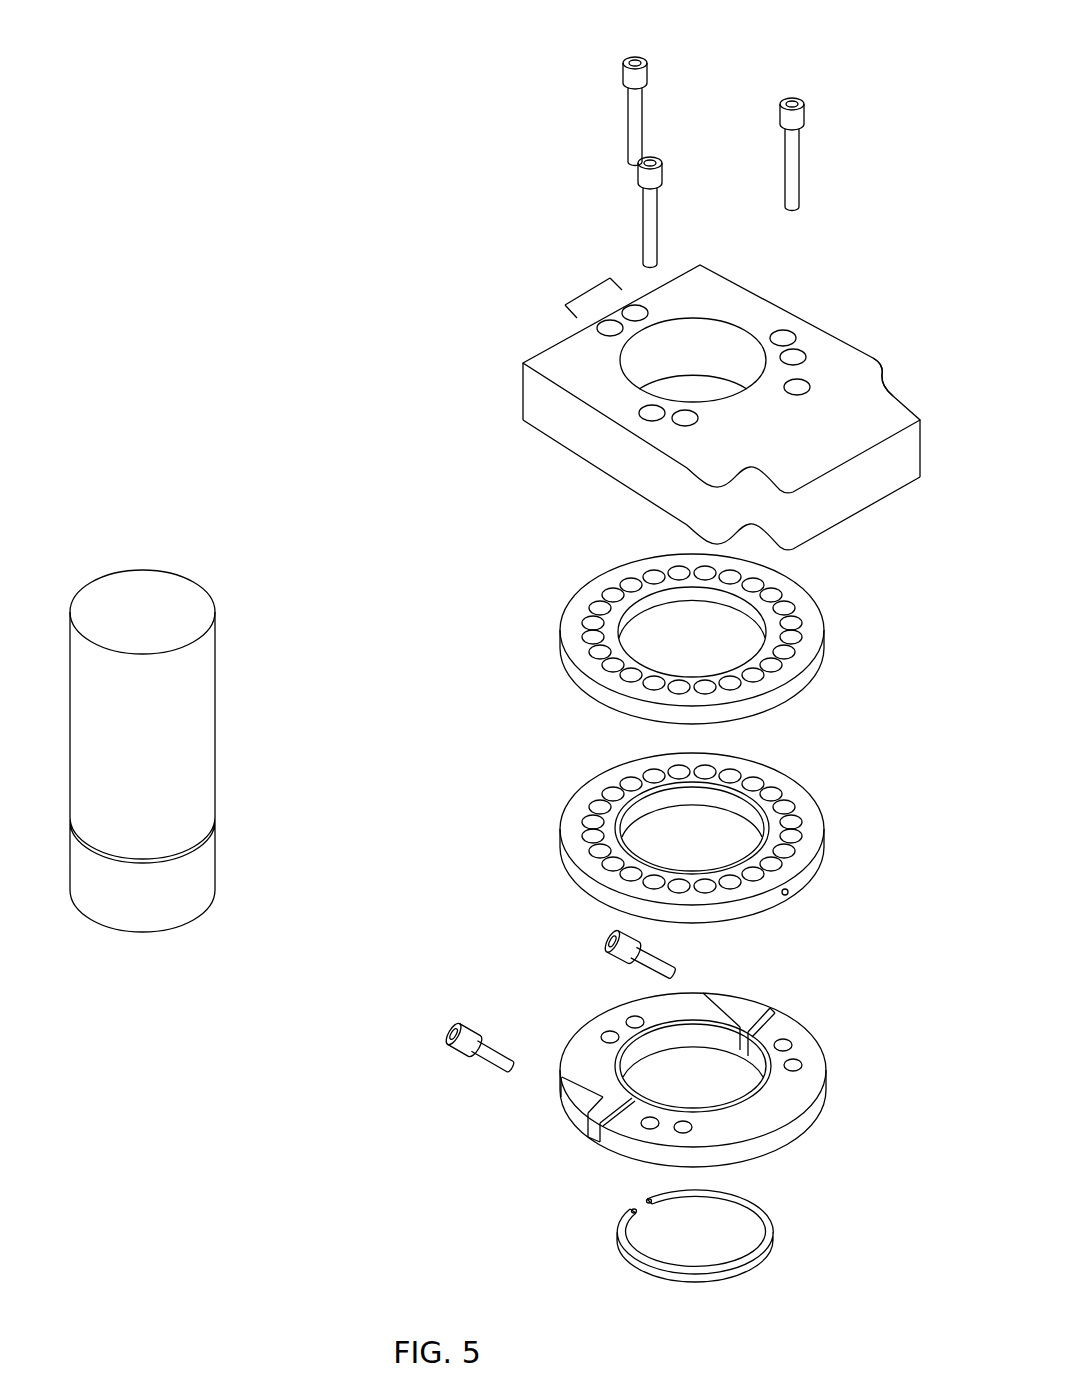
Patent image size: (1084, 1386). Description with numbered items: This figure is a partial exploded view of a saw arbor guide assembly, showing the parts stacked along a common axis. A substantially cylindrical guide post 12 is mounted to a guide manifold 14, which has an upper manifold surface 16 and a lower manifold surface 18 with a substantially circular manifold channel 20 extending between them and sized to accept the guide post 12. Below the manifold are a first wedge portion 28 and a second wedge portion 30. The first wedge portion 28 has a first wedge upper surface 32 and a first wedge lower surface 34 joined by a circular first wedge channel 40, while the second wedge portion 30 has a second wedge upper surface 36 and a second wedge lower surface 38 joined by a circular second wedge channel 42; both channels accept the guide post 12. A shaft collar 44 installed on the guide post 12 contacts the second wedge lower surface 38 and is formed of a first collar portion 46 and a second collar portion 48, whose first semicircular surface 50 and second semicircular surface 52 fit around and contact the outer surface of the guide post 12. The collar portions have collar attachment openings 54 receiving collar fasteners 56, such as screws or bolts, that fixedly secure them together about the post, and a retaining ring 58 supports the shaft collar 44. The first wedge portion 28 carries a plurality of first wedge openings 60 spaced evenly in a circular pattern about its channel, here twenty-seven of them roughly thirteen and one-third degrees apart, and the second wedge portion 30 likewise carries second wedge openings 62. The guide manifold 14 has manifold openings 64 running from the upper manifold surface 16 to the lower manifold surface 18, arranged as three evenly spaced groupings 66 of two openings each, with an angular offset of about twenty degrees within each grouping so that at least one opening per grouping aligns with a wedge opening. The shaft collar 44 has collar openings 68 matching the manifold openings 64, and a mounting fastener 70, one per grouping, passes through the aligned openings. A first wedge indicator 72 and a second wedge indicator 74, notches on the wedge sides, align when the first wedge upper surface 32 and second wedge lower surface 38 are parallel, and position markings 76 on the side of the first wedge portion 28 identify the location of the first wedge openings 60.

The guide post 12 is at (193, 762).
The guide manifold 14 is at (665, 392).
The upper manifold surface 16 is at (844, 368).
The lower manifold surface 18 is at (862, 513).
The manifold channel 20 is at (681, 361).
The first wedge portion 28 is at (658, 611).
The second wedge portion 30 is at (661, 816).
The first wedge upper surface 32 is at (815, 623).
The first wedge lower surface 34 is at (808, 692).
The second wedge upper surface 36 is at (818, 825).
The second wedge lower surface 38 is at (808, 890).
The first wedge channel 40 is at (676, 651).
The second wedge channel 42 is at (676, 844).
The shaft collar 44 is at (675, 1061).
The first collar portion 46 is at (583, 1063).
The second collar portion 48 is at (793, 1132).
The first semicircular surface 50 is at (693, 1042).
The second semicircular surface 52 is at (757, 1063).
The collar attachment openings 54 is at (758, 1016).
The collar fasteners 56 is at (613, 943).
The retaining ring 58 is at (605, 1244).
The first wedge openings 60 is at (679, 573).
The second wedge openings 62 is at (679, 773).
The manifold openings 64 is at (793, 358).
The groupings 66 is at (588, 290).
The collar openings 68 is at (793, 1066).
The mounting fastener 70 is at (777, 160).
The first wedge indicator 72 is at (601, 578).
The second wedge indicator 74 is at (600, 778).
The position markings 76 is at (815, 668).